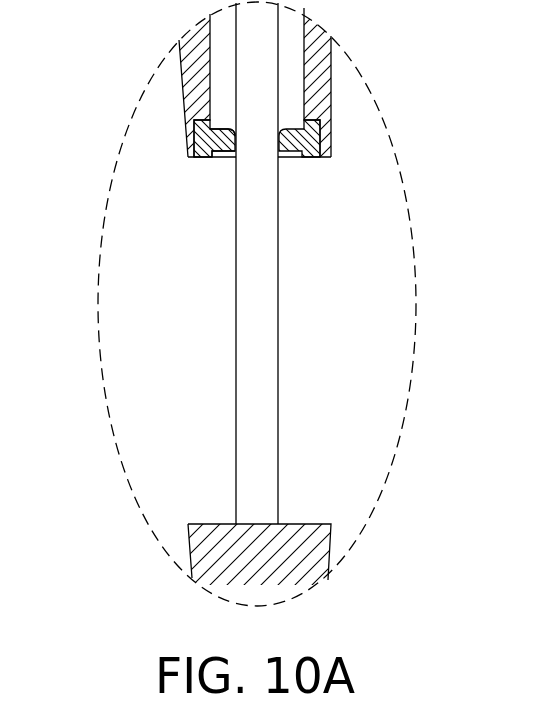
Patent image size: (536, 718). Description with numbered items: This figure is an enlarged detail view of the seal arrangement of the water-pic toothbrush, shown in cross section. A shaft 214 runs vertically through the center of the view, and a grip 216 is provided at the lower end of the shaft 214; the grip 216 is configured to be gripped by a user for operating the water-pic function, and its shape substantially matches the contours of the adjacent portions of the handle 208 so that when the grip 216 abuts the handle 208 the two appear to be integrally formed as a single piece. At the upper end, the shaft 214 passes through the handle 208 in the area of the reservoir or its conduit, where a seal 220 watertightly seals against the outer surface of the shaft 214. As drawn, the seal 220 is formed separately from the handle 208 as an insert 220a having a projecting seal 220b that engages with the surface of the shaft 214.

The handle 208 is at (331, 100).
The shaft 214 is at (278, 275).
The grip 216 is at (308, 555).
The seal 220 is at (251, 156).
The insert 220a is at (208, 125).
The projecting seal 220b is at (222, 143).